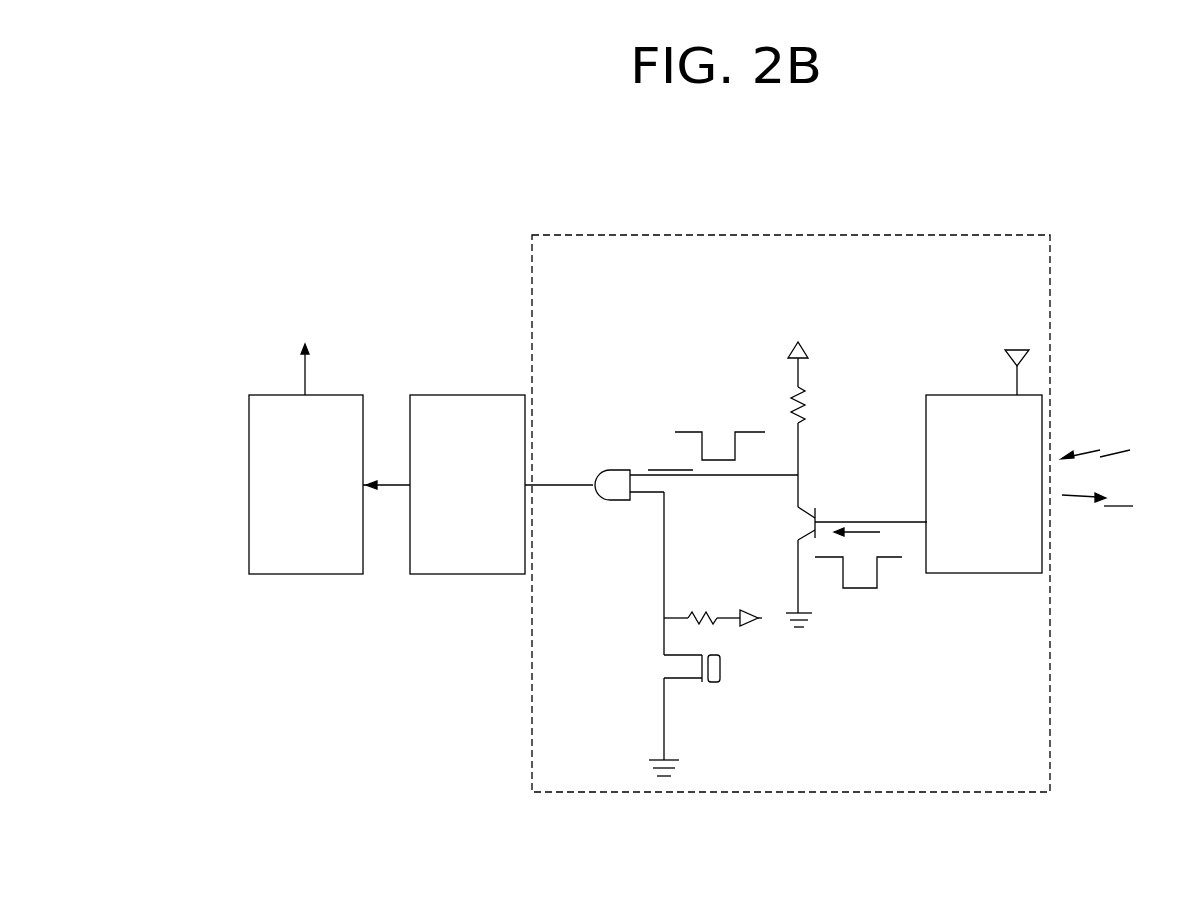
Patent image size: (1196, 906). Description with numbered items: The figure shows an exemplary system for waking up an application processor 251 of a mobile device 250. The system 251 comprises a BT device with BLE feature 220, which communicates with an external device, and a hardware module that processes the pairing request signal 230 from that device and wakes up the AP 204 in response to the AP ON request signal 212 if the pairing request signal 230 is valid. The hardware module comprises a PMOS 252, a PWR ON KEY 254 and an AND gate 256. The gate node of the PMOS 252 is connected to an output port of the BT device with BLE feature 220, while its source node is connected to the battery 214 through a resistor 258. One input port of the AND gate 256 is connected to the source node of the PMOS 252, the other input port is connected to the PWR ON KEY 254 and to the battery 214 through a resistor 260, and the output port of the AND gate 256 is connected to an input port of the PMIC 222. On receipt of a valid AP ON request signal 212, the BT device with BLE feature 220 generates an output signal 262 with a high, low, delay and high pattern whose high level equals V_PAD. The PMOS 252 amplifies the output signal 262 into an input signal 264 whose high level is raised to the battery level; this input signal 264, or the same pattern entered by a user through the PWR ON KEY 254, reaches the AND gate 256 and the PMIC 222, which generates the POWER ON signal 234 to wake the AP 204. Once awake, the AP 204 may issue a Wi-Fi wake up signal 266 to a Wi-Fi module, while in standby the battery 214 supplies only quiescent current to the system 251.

The mobile device 250 is at (320, 203).
The system for waking up application processor 251 is at (812, 792).
The AP 204 is at (330, 491).
The PMIC 222 is at (493, 491).
The Wi-Fi wake up signal 266 is at (308, 370).
The POWER ON signal 234 is at (390, 490).
The AND gate 256 is at (605, 468).
The input signal 264 is at (668, 466).
The battery 214 is at (795, 340).
The resistor 258 is at (802, 407).
The PMOS 252 is at (778, 513).
The output signal 262 is at (862, 531).
The BT device with BLE feature 220 is at (1003, 519).
The pairing request signal 230 is at (1100, 448).
The AP ON request signal 212 is at (1097, 500).
The resistor 260 is at (692, 613).
The PWR ON KEY 254 is at (721, 673).